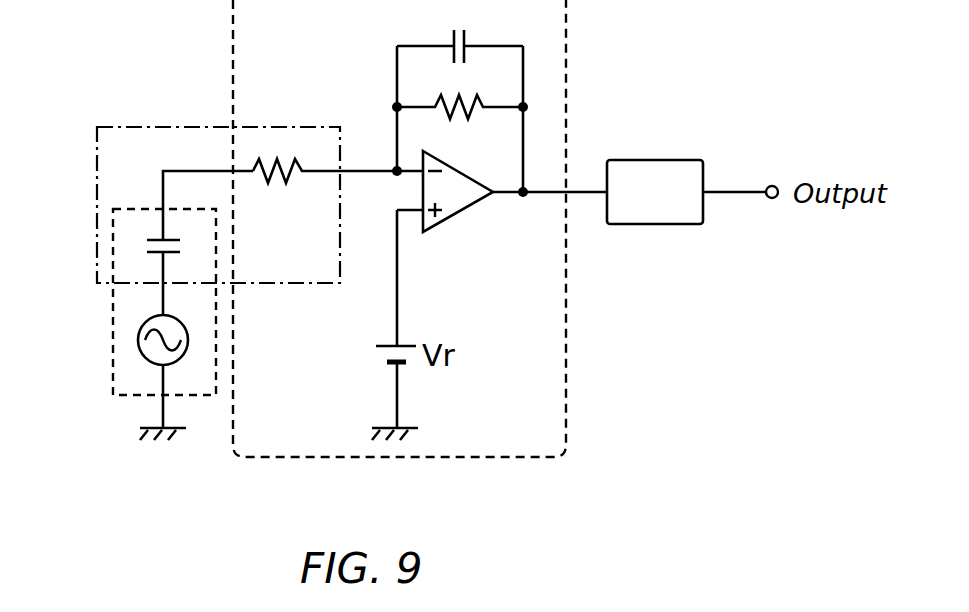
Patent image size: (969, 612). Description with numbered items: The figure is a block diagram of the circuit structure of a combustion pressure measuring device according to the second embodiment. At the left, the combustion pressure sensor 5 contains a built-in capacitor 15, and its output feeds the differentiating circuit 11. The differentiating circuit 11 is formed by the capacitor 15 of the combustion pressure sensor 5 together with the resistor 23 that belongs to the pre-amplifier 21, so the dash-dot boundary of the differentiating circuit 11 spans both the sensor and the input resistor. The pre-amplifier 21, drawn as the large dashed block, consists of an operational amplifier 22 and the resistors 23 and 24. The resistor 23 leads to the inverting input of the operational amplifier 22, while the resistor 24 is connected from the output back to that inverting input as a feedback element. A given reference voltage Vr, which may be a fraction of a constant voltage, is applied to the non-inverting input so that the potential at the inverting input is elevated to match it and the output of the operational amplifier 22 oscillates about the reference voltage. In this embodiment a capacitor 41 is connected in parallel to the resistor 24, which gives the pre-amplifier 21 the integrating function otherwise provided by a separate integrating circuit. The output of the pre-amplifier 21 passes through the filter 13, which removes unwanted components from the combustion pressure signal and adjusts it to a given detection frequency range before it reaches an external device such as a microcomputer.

The combustion pressure sensor 5 is at (113, 334).
The differentiating circuit 11 is at (152, 126).
The filter 13 is at (650, 160).
The capacitor 15 is at (155, 240).
The pre-amplifier 21 is at (568, 30).
The operational amplifier 22 is at (466, 212).
The resistor 23 is at (266, 160).
The resistor 24 is at (453, 100).
The capacitor 41 is at (466, 36).